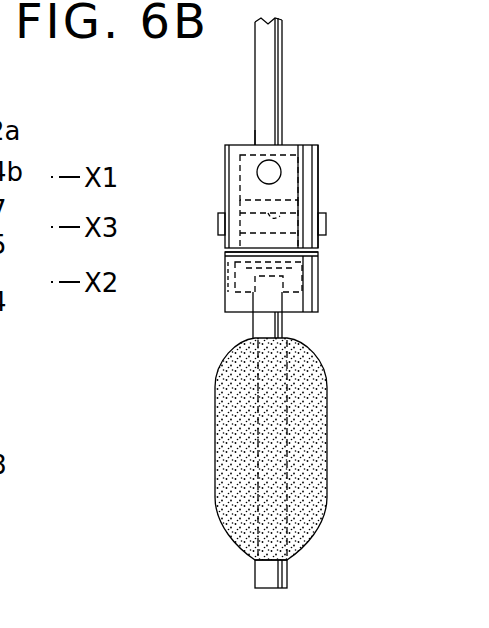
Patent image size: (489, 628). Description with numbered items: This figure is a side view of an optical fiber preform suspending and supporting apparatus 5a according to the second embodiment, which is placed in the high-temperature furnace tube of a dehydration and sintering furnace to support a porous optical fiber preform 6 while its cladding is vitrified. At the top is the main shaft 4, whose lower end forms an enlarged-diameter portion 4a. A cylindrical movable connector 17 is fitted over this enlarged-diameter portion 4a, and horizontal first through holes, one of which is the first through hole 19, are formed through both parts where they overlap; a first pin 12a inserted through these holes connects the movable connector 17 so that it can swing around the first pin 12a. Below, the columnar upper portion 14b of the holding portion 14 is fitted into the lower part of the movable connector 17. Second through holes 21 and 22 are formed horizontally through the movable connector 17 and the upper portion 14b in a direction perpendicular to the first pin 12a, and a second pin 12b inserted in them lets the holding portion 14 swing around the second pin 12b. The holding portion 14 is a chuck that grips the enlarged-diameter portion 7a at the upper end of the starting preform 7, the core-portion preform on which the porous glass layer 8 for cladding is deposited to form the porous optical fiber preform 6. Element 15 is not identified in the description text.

The main shaft 4 is at (271, 48).
The enlarged-diameter portion 4a is at (248, 150).
The optical fiber preform suspending and supporting apparatus 5a is at (326, 140).
The first pin 12a is at (266, 163).
The second pin 12b is at (326, 221).
The holding portion 14 is at (312, 304).
The upper portion of the holding portion 14b is at (316, 247).
The groove 15 is at (232, 280).
The movable connector 17 is at (313, 161).
The first through hole 19 is at (262, 173).
The second through hole 21 is at (215, 222).
The second through hole 22 is at (320, 193).
The porous optical fiber preform 6 is at (212, 479).
The starting preform 7 is at (280, 447).
The enlarged-diameter portion of the starting preform 7a is at (318, 272).
The porous glass layer 8 is at (310, 473).